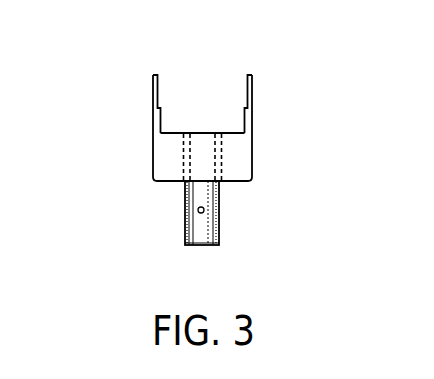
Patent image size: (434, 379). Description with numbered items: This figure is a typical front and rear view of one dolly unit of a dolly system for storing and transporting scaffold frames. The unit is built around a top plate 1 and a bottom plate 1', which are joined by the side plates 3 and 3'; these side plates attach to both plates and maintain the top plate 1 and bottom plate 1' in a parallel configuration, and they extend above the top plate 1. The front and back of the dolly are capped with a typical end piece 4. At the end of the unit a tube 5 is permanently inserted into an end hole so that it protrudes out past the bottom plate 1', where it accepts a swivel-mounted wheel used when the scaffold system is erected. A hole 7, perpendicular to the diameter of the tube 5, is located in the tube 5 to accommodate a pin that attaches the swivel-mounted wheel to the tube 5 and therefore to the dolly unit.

The top plate 1 is at (203, 91).
The bottom plate 1' is at (168, 215).
The side plate 3 is at (111, 107).
The side plate 3' is at (284, 104).
The end piece 4 is at (243, 163).
The tube 5 is at (216, 227).
The hole 7 is at (198, 211).